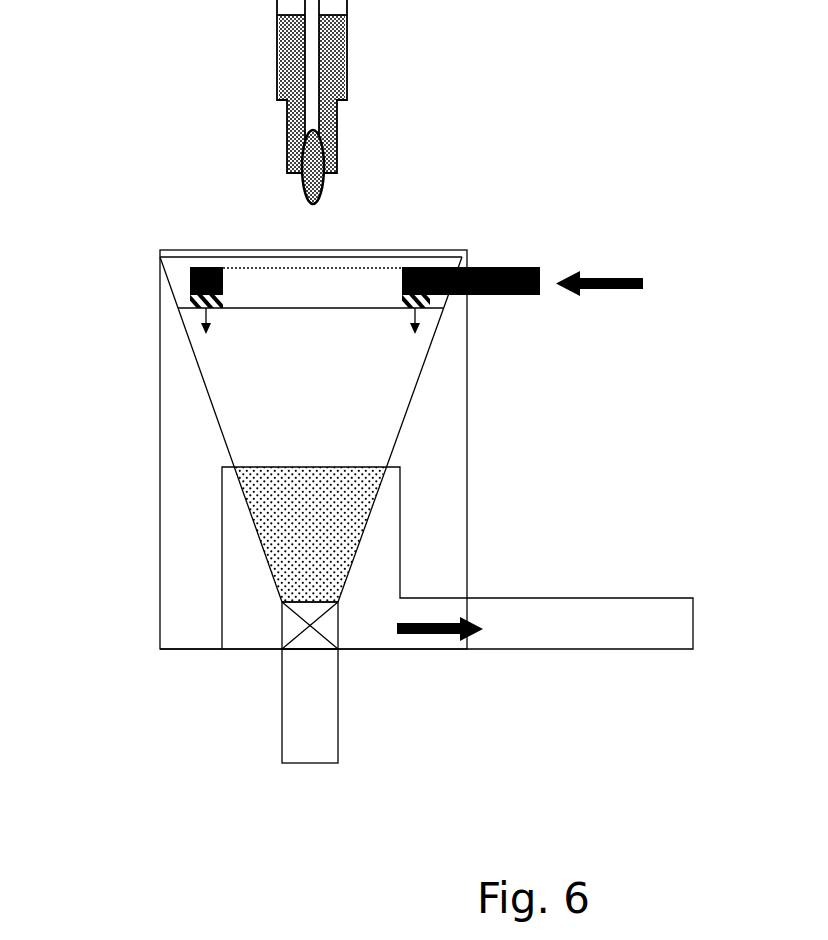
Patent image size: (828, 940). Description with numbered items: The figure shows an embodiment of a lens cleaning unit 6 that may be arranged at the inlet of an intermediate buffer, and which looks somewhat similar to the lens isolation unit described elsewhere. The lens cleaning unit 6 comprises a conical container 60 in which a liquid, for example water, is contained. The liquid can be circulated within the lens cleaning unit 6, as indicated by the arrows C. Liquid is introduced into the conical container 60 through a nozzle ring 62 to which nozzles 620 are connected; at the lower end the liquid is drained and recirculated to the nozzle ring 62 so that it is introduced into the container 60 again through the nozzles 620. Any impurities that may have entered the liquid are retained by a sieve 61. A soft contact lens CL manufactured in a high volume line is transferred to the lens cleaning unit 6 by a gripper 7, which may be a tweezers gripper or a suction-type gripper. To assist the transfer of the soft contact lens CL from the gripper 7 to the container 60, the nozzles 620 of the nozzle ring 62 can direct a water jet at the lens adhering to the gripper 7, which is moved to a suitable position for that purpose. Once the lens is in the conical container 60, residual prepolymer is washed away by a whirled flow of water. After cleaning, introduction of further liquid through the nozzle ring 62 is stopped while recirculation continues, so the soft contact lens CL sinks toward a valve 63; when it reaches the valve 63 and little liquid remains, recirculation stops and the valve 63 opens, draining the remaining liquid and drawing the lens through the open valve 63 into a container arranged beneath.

The lens cleaning unit 6 is at (148, 728).
The gripper 7 is at (360, 99).
The soft contact lens CL is at (324, 190).
The conical container 60 is at (413, 395).
The sieve 61 is at (302, 503).
The nozzle ring 62 is at (190, 283).
The nozzles 620 is at (214, 308).
The valve 63 is at (350, 660).
The arrows indicating liquid circulation C is at (613, 278).